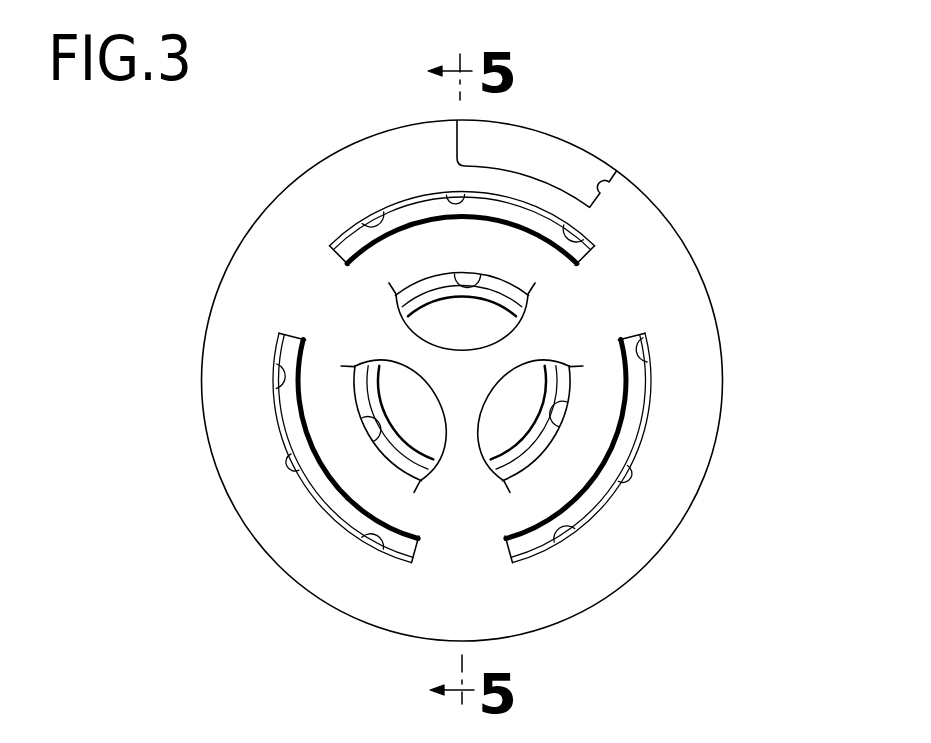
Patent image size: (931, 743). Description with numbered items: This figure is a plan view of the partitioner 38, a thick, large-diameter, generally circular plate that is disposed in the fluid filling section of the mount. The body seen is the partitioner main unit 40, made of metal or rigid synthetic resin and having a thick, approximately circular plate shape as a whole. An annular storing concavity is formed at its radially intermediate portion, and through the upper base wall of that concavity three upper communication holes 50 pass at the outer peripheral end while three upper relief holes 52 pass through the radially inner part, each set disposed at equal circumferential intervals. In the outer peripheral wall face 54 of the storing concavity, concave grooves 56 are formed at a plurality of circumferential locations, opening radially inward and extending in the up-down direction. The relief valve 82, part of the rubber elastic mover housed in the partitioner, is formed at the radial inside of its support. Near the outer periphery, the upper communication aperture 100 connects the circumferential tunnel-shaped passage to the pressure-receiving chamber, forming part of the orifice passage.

The partitioner 38 is at (756, 233).
The partitioner main unit 40 is at (263, 278).
The upper communication holes 50 is at (336, 240).
The upper relief holes 52 is at (468, 284).
The outer peripheral wall face 54 is at (441, 194).
The concave grooves 56 is at (374, 214).
The relief valve 82 is at (536, 432).
The upper communication aperture 100 is at (607, 183).